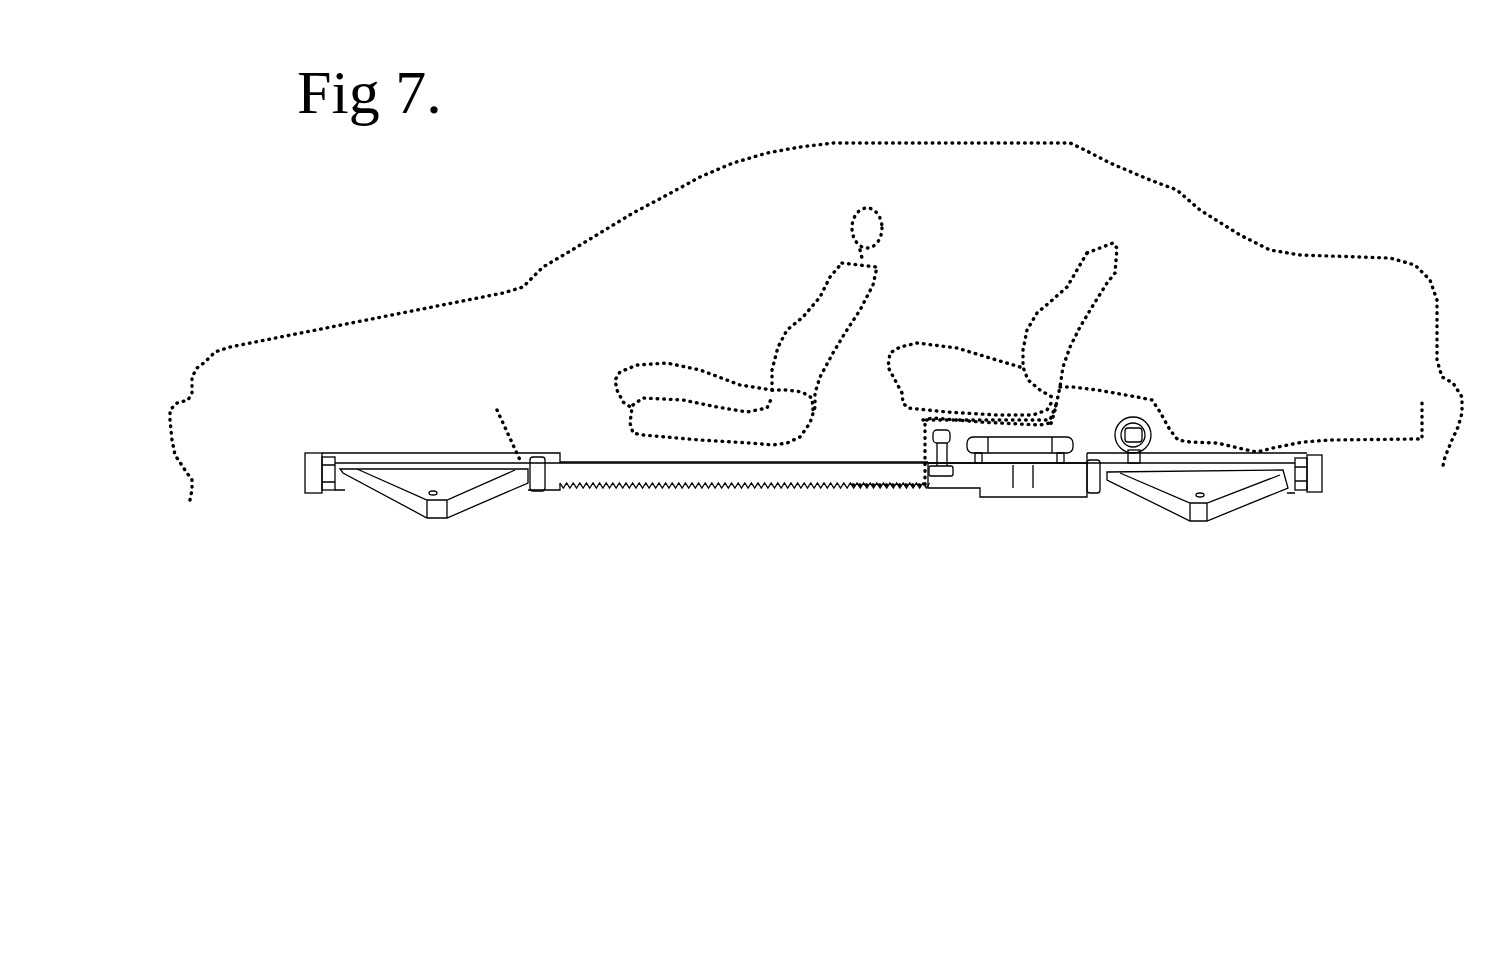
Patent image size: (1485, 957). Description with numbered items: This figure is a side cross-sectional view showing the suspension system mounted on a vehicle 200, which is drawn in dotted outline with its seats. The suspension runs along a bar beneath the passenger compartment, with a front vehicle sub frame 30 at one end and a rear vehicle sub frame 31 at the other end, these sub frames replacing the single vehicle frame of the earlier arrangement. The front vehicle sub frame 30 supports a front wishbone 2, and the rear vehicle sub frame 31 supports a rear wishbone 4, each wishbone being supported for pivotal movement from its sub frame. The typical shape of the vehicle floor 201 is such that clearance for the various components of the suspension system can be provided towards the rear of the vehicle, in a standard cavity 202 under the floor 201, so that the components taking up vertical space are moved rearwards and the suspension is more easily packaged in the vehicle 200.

The vehicle 200 is at (1177, 190).
The vehicle floor 201 is at (1137, 393).
The standard cavity 202 is at (1092, 415).
The front wishbone 2 is at (453, 505).
The rear wishbone 4 is at (1217, 507).
The front vehicle sub frame 30 is at (307, 477).
The rear vehicle sub frame 31 is at (1325, 483).